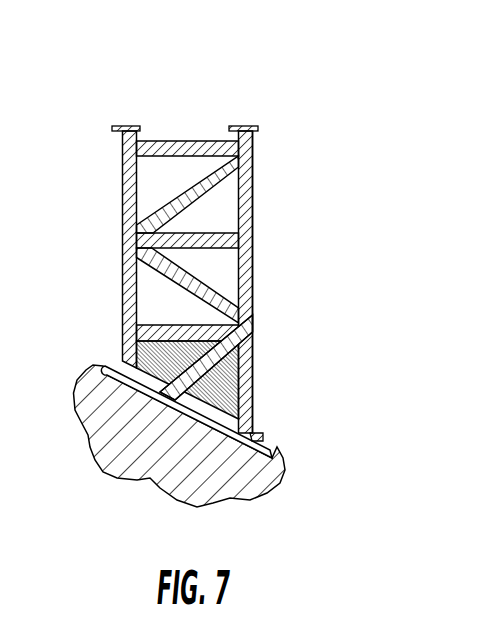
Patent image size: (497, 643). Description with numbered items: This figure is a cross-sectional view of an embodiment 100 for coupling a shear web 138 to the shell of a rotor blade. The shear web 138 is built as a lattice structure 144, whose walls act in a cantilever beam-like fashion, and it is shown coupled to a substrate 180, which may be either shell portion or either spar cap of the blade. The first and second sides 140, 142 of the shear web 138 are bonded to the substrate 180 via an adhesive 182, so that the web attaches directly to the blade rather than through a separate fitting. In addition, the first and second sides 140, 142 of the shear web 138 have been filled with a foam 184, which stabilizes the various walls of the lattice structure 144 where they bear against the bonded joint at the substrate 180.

The tower structure 100 is at (182, 245).
The shear web 138 is at (282, 222).
The lattice structure 144 is at (172, 188).
The foam 184 is at (137, 350).
The adhesive 182 is at (110, 368).
The substrate 180 is at (278, 455).
The first side 140 is at (245, 359).
The second side 142 is at (188, 380).